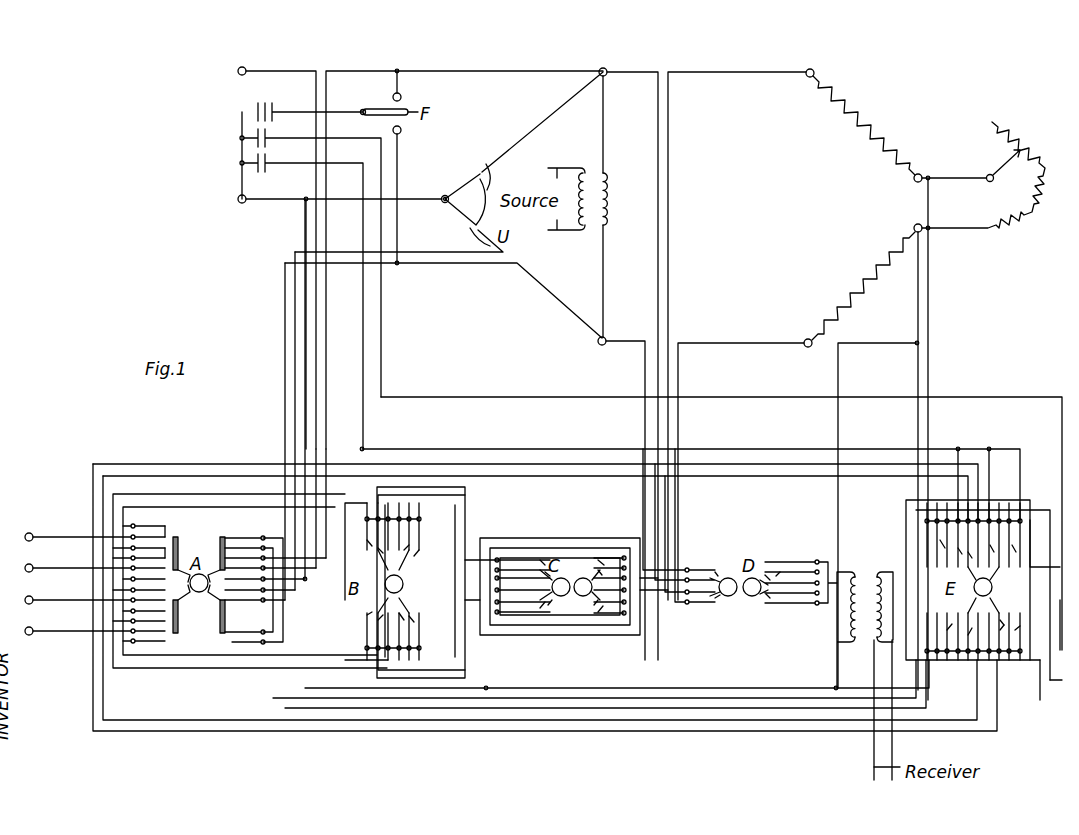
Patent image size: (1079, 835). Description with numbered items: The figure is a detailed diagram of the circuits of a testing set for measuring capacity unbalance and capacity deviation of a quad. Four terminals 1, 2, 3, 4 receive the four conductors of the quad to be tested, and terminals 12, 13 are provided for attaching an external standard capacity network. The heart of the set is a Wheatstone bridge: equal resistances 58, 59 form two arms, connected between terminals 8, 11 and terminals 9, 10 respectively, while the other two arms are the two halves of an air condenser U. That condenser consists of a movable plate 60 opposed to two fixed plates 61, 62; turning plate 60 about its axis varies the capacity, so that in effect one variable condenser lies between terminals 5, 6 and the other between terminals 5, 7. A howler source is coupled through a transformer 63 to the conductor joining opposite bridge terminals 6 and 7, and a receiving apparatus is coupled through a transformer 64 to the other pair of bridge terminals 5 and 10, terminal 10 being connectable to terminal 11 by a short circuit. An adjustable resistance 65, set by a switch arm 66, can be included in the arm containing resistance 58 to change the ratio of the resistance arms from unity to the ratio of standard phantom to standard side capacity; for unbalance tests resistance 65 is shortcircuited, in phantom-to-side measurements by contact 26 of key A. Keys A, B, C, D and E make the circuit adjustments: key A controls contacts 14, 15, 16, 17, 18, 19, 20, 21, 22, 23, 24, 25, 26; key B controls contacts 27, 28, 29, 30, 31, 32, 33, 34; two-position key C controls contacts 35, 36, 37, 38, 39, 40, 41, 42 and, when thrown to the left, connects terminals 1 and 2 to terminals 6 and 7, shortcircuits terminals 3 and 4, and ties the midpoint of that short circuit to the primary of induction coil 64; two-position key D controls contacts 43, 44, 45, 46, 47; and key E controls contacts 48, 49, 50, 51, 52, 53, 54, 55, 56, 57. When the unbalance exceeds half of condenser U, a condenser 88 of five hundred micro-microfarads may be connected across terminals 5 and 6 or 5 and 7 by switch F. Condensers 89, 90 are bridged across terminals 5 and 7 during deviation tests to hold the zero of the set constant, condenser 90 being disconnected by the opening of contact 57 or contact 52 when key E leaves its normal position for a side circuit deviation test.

The terminal 1 is at (76, 525).
The terminal 2 is at (76, 556).
The terminal 3 is at (76, 588).
The terminal 4 is at (76, 619).
The bridge terminal 5 is at (456, 200).
The bridge terminal 6 is at (700, 353).
The bridge terminal 7 is at (619, 498).
The terminal 8 is at (808, 60).
The terminal 9 is at (797, 513).
The bridge terminal 10 is at (912, 228).
The terminal 11 is at (950, 427).
The terminal 12 is at (404, 255).
The terminal 13 is at (323, 319).
The contact of key A 14 is at (165, 527).
The contact of key A 15 is at (165, 537).
The contact of key A 16 is at (165, 548).
The contact of key A 17 is at (170, 570).
The contact of key A 18 is at (165, 600).
The contact of key A 19 is at (168, 612).
The contact of key A 20 is at (165, 641).
The contact of key A 21 is at (165, 648).
The contact of key A 22 is at (232, 538).
The contact of key A 23 is at (232, 568).
The contact of key A 24 is at (232, 580).
The contact of key A 25 is at (245, 598).
The contact of key A 26 is at (232, 645).
The contact of key B 27 is at (367, 540).
The contact of key B 28 is at (378, 548).
The contact of key B 29 is at (412, 545).
The contact of key B 30 is at (409, 550).
The contact of key B 31 is at (367, 615).
The contact of key B 32 is at (378, 620).
The contact of key B 33 is at (404, 620).
The contact of key B 34 is at (414, 622).
The contact of key C 35 is at (540, 560).
The contact of key C 36 is at (545, 572).
The contact of key C 37 is at (548, 605).
The contact of key C 38 is at (540, 608).
The contact of key C 39 is at (598, 560).
The contact of key C 40 is at (598, 570).
The contact of key C 41 is at (594, 605).
The contact of key C 42 is at (598, 612).
The contact of key D 43 is at (715, 572).
The contact of key D 44 is at (715, 598).
The contact of key D 45 is at (780, 572).
The contact of key D 46 is at (765, 575).
The contact of key D 47 is at (770, 598).
The contact of key E 48 is at (940, 540).
The contact of key E 49 is at (958, 548).
The contact of key E 50 is at (968, 552).
The contact of key E 51 is at (990, 545).
The contact of key E 52 is at (1012, 545).
The contact of key E 53 is at (947, 630).
The contact of key E 54 is at (968, 635).
The contact of key E 55 is at (1000, 630).
The contact of key E 56 is at (1000, 620).
The contact of key E 57 is at (1015, 630).
The resistance 58 is at (858, 138).
The resistance 59 is at (850, 270).
The movable plate 60 is at (452, 196).
The condenser plate 61 is at (489, 170).
The condenser plate 62 is at (468, 240).
The transformer 63 is at (598, 232).
The transformer 64 is at (866, 638).
The adjustable resistance 65 is at (987, 184).
The switch arm 66 is at (996, 186).
The condenser 88 is at (252, 112).
The condenser 89 is at (252, 138).
The condenser 90 is at (252, 163).